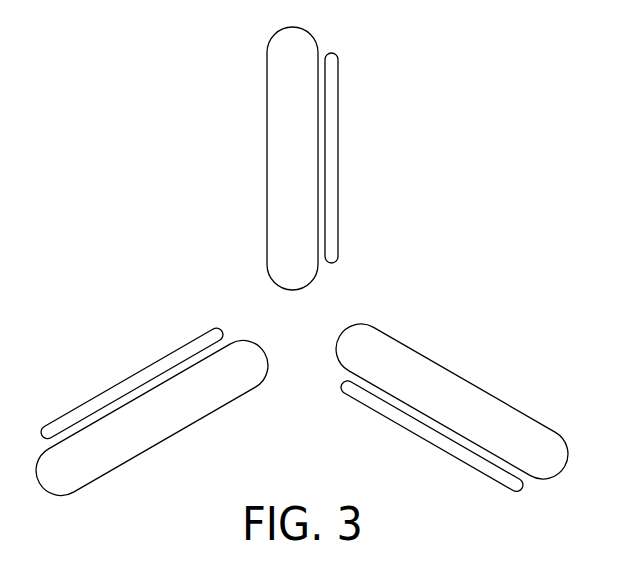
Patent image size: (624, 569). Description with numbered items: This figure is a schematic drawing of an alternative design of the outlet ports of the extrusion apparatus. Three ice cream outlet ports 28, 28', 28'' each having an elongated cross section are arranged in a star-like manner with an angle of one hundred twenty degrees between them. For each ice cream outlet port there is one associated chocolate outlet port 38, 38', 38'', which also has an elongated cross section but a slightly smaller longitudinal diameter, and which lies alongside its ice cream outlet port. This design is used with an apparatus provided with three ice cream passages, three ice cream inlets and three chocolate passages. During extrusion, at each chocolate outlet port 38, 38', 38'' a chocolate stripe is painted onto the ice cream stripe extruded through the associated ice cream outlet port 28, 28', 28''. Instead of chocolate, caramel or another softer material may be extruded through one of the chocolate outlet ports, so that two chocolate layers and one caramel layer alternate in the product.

The ice cream outlet port 28 is at (266, 158).
The chocolate outlet port 38 is at (358, 158).
The ice cream outlet port 28' is at (452, 401).
The chocolate outlet port 38' is at (432, 436).
The ice cream outlet port 28'' is at (152, 417).
The chocolate outlet port 38'' is at (132, 383).